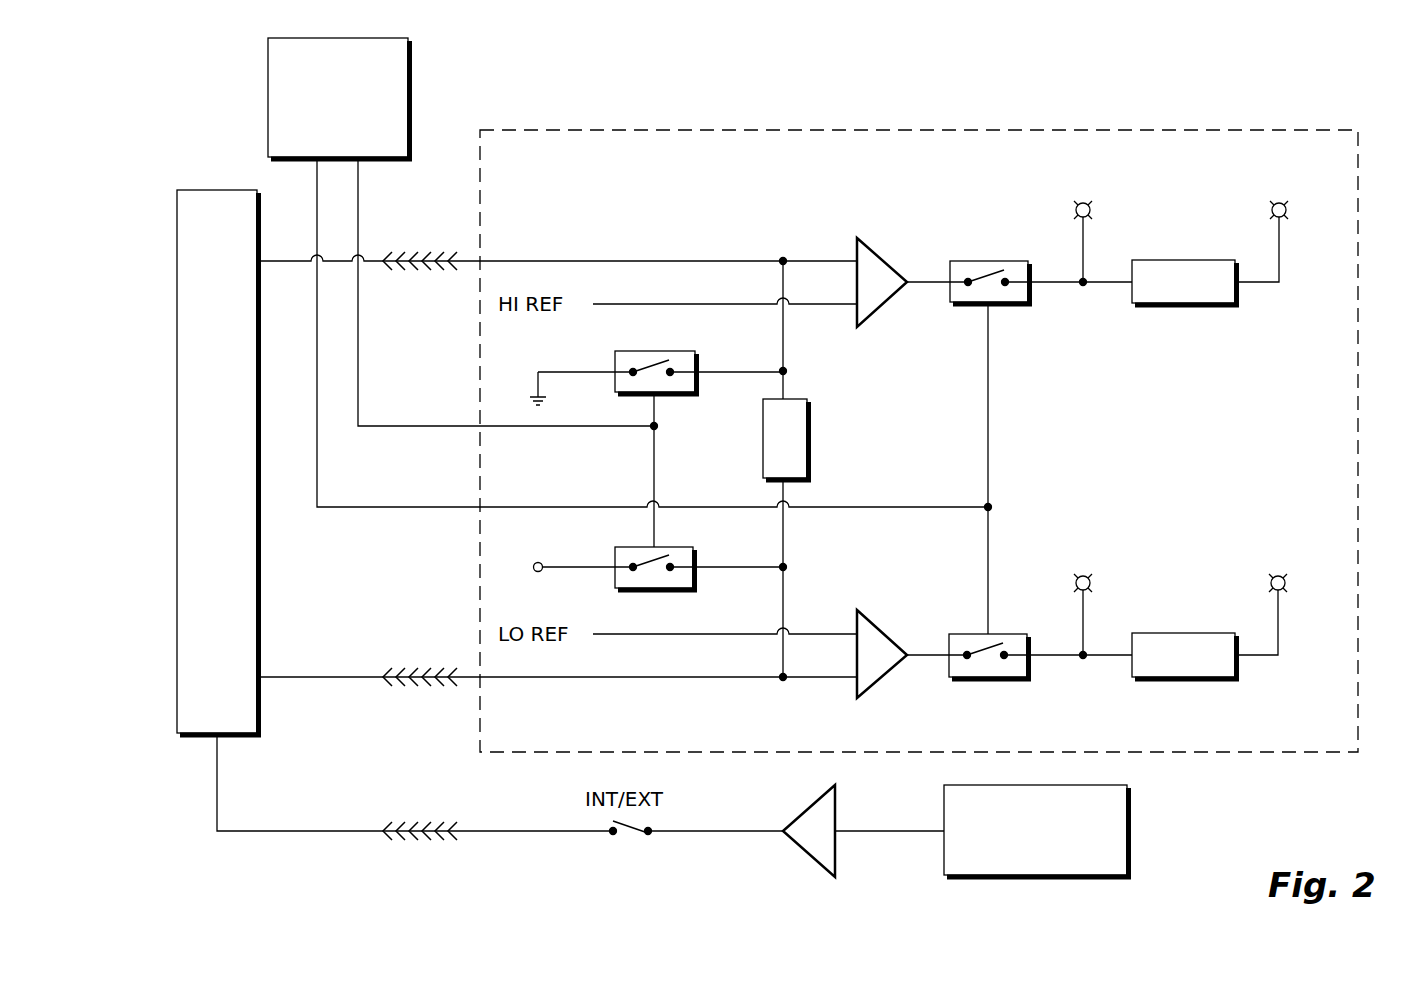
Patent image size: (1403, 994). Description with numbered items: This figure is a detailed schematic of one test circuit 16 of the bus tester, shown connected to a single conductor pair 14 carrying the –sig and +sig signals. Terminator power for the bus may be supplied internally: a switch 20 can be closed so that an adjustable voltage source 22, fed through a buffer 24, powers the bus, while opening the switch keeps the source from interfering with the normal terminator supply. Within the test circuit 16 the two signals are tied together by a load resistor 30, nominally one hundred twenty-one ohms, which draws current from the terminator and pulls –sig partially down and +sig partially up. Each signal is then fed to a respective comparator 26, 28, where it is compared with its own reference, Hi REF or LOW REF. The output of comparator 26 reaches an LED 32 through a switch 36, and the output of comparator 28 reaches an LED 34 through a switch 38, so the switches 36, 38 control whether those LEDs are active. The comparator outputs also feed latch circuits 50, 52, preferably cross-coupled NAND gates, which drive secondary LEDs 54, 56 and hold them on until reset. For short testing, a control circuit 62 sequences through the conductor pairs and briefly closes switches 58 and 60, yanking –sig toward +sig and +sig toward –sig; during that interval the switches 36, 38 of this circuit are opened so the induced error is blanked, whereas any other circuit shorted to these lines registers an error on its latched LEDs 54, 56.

The conductor pair 14 is at (279, 260).
The test circuit 16 is at (1358, 655).
The switch 20 is at (607, 843).
The adjustable voltage source 22 is at (1128, 800).
The buffer 24 is at (818, 795).
The comparator 26 is at (870, 243).
The comparator 28 is at (870, 615).
The load resistor 30 is at (808, 420).
The LED 32 is at (1088, 204).
The LED 34 is at (1088, 577).
The switch 36 is at (999, 261).
The switch 38 is at (1010, 634).
The latch circuit 50 is at (1192, 260).
The latch circuit 52 is at (1192, 633).
The LED 54 is at (1284, 204).
The LED 56 is at (1283, 577).
The switch 58 is at (663, 351).
The switch 60 is at (679, 547).
The control circuit 62 is at (409, 52).